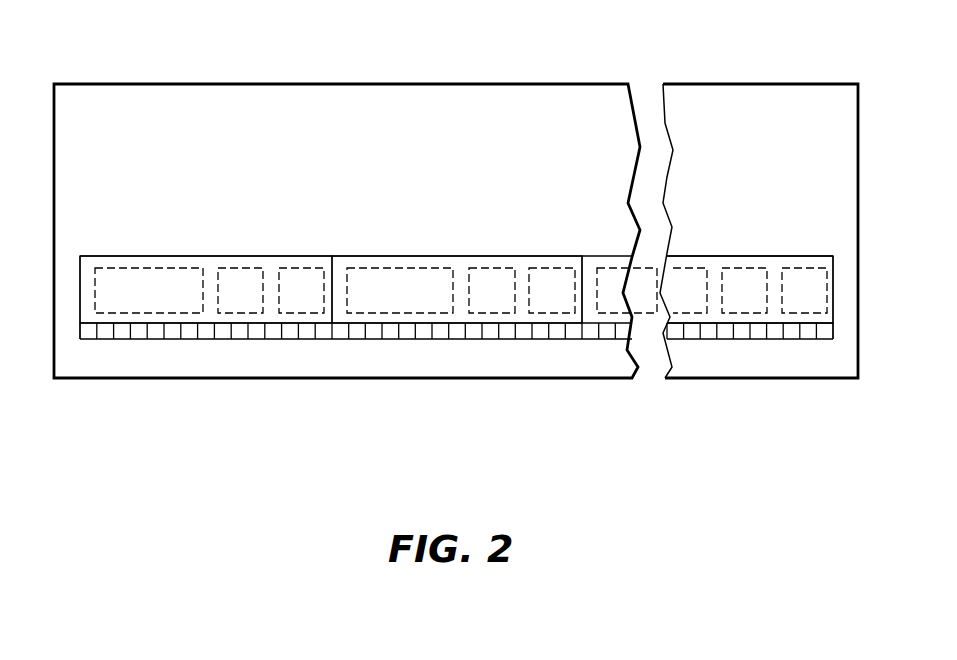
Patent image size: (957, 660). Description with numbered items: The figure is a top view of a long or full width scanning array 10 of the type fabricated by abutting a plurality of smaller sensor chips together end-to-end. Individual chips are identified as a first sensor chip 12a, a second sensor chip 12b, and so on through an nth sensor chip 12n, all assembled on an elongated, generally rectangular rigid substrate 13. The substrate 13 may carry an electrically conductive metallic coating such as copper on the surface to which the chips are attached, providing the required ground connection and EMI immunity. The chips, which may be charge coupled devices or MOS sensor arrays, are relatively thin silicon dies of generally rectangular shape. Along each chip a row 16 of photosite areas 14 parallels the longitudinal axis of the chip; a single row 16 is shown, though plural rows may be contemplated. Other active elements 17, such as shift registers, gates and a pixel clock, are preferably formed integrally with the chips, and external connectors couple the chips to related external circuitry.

The full width scanning array 10 is at (143, 538).
The sensor chip 12a is at (206, 248).
The sensor chip 12b is at (402, 256).
The sensor chip 12n is at (755, 256).
The rigid substrate 13 is at (412, 378).
The photosite areas 14 is at (90, 332).
The row of photosite areas 16 is at (456, 384).
The active elements 17 is at (187, 275).